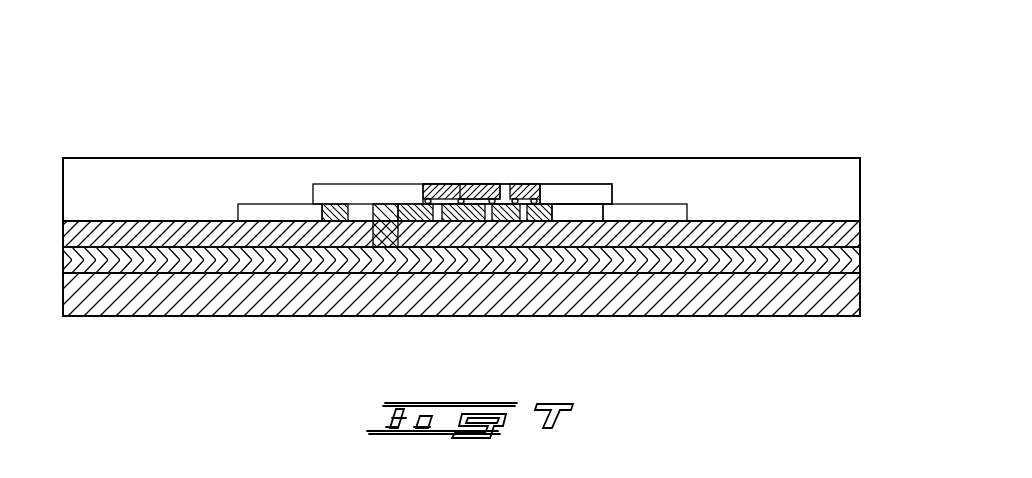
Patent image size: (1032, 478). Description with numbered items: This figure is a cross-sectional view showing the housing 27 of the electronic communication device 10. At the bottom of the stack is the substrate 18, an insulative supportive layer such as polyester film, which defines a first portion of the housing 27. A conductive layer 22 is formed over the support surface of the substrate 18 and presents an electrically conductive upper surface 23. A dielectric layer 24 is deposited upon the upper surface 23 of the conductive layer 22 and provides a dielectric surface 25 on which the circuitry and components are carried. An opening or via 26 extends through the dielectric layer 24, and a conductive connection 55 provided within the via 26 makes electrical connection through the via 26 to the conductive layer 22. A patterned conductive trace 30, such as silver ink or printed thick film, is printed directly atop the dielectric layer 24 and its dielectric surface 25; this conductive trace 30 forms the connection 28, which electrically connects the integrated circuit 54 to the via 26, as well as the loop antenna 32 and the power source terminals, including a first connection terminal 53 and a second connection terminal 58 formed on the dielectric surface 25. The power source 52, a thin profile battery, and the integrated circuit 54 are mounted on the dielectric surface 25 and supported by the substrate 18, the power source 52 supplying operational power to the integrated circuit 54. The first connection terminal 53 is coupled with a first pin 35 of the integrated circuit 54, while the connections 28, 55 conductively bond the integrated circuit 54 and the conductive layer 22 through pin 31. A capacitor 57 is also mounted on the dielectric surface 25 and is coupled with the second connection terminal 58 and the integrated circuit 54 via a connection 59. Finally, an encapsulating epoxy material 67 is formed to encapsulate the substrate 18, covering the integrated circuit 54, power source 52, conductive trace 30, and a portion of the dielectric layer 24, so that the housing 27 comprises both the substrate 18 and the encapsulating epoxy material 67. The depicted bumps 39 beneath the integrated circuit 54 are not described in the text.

The electronic communication device 10 is at (207, 75).
The housing 27 is at (773, 72).
The encapsulating epoxy material 67 is at (147, 173).
The dielectric layer 24 is at (157, 228).
The dielectric surface 25 is at (728, 220).
The upper surface 23 is at (812, 245).
The conductive layer 22 is at (843, 262).
The substrate 18 is at (800, 317).
The antenna 32 is at (255, 212).
The conductive connection 55 is at (378, 208).
The via 26 is at (387, 250).
The connection 28 is at (400, 208).
The first connection terminal 53 is at (457, 222).
The connection 59 is at (506, 212).
The second connection terminal 58 is at (545, 210).
The power source 52 is at (323, 182).
The first pin 35 is at (465, 190).
The pin 31 is at (428, 186).
The integrated circuit 54 is at (480, 192).
The solder bump 39 is at (498, 199).
The capacitor 57 is at (523, 192).
The conductive trace 30 is at (638, 183).